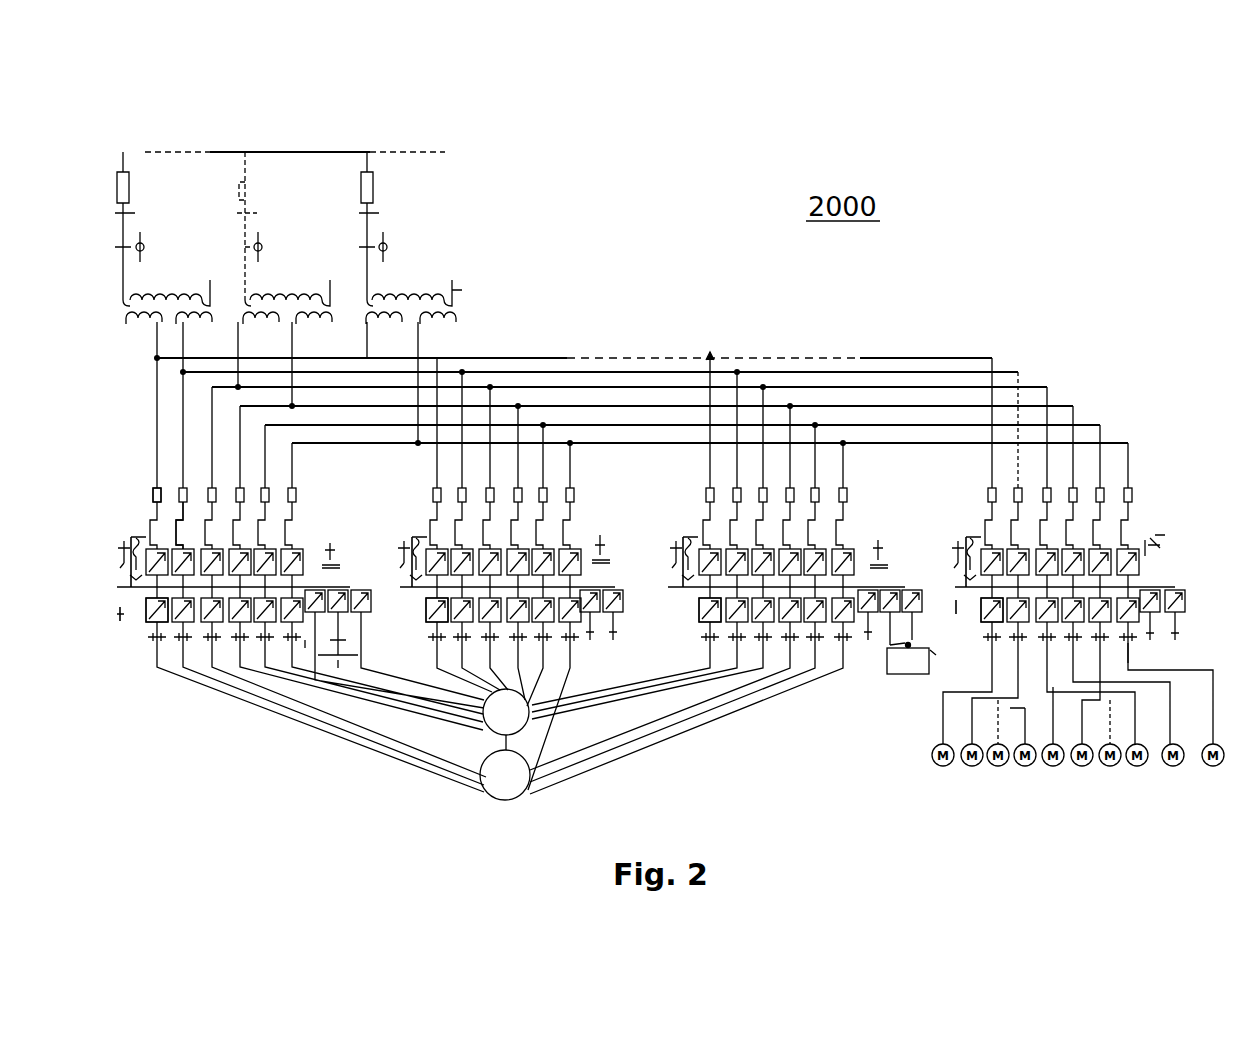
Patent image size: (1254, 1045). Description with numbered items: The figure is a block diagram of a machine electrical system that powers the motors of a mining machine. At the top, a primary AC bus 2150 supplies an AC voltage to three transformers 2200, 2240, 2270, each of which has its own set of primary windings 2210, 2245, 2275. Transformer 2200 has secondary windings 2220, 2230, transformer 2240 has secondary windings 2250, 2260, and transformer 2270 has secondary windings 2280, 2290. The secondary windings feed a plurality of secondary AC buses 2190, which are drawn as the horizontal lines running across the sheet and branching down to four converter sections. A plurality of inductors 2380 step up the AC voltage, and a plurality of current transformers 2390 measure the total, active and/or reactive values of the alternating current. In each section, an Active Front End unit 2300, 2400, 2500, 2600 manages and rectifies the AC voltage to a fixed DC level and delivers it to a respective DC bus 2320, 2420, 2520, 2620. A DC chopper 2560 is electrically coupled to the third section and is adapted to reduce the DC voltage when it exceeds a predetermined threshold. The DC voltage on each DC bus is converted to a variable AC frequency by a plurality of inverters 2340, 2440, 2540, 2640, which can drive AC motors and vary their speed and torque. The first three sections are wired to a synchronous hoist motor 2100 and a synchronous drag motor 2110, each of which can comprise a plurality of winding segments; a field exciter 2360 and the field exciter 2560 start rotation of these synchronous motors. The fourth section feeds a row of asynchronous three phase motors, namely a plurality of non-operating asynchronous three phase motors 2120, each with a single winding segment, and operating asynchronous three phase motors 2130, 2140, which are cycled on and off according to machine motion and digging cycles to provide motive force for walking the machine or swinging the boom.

The synchronous hoist motor 2100 is at (540, 712).
The synchronous drag motor 2110 is at (507, 795).
The non-operating asynchronous three phase motors 2120 is at (1044, 705).
The operating asynchronous three phase motor 2130 is at (1173, 770).
The operating asynchronous three phase motor 2140 is at (1213, 770).
The primary AC bus 2150 is at (295, 133).
The secondary AC buses 2190 is at (152, 440).
The transformer 2200 is at (159, 226).
The primary windings 2210 is at (166, 286).
The secondary winding 2220 is at (147, 335).
The secondary winding 2230 is at (201, 342).
The transformer 2240 is at (276, 226).
The primary windings 2245 is at (287, 286).
The secondary winding 2250 is at (264, 349).
The secondary winding 2260 is at (319, 359).
The transformer 2270 is at (402, 226).
The primary windings 2275 is at (414, 286).
The secondary winding 2280 is at (392, 335).
The secondary winding 2290 is at (445, 377).
The Active Front End unit 2300 is at (144, 551).
The DC bus 2320 is at (312, 585).
The inverter 2340 is at (142, 617).
The field exciter 2360 is at (370, 648).
The inductors 2380 is at (176, 530).
The current transformers 2390 is at (150, 484).
The Active Front End unit 2400 is at (432, 551).
The DC bus 2420 is at (592, 586).
The inverter 2440 is at (415, 611).
The Active Front End unit 2500 is at (707, 551).
The DC bus 2520 is at (868, 586).
The inverter 2540 is at (685, 611).
The DC chopper 2560 is at (861, 604).
The Active Front End unit 2600 is at (988, 551).
The DC bus 2620 is at (1167, 588).
The inverter 2640 is at (969, 616).